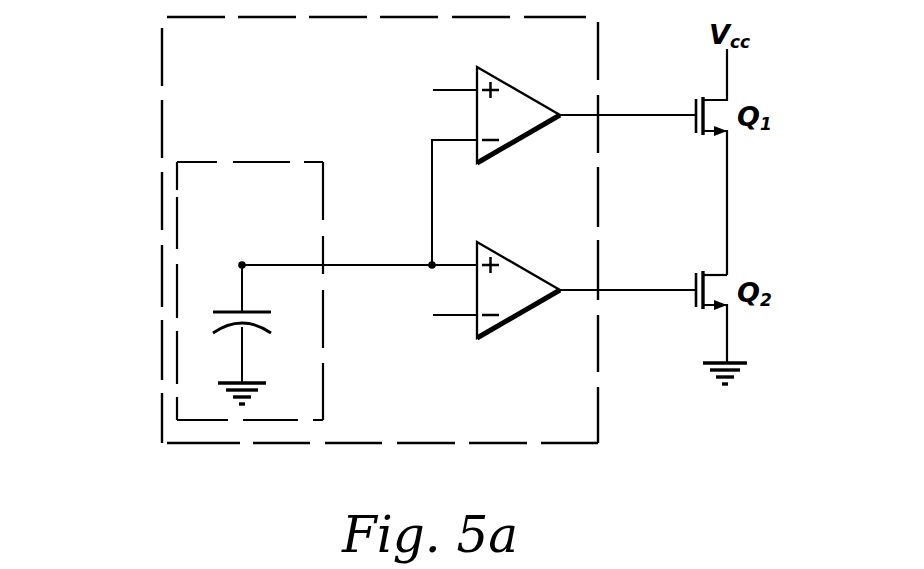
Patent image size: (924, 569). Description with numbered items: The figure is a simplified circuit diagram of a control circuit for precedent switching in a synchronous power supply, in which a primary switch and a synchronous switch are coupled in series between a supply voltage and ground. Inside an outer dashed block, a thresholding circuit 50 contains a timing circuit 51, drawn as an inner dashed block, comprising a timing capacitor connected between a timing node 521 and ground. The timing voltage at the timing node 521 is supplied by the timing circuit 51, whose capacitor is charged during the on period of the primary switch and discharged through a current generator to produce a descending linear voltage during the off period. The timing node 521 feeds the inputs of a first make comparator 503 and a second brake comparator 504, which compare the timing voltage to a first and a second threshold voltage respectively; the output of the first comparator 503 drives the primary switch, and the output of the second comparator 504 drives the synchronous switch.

The thresholding circuit 50 is at (161, 205).
The timing circuit 51 is at (323, 383).
The timing node 521 is at (240, 265).
The first (MAKE) comparator 503 is at (522, 92).
The second (BRAKE) comparator 504 is at (522, 267).